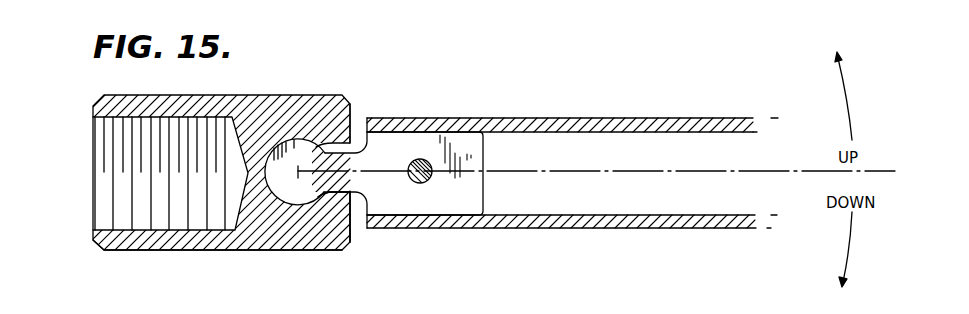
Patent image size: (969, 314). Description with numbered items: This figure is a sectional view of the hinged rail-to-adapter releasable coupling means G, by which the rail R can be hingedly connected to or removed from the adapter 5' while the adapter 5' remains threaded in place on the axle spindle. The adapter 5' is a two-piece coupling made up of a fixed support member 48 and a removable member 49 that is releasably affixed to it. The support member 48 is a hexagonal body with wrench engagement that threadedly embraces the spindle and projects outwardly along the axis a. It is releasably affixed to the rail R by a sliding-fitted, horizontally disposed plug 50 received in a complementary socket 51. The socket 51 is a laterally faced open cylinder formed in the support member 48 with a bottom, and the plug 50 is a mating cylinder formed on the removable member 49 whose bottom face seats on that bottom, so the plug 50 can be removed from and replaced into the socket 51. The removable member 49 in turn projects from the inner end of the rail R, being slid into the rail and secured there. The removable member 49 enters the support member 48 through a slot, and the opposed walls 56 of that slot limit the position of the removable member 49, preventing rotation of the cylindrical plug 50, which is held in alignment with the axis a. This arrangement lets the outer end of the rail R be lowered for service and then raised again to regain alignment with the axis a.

The support member 48 is at (266, 97).
The adapter 5' is at (217, 267).
The socket 51 is at (290, 203).
The plug 50 is at (318, 188).
The opposed walls of the slot 56 is at (361, 152).
The hinged rail-to-adapter releasable coupling means G is at (344, 90).
The removable member 49 is at (393, 137).
The rail R is at (648, 114).
The axis a is at (705, 171).